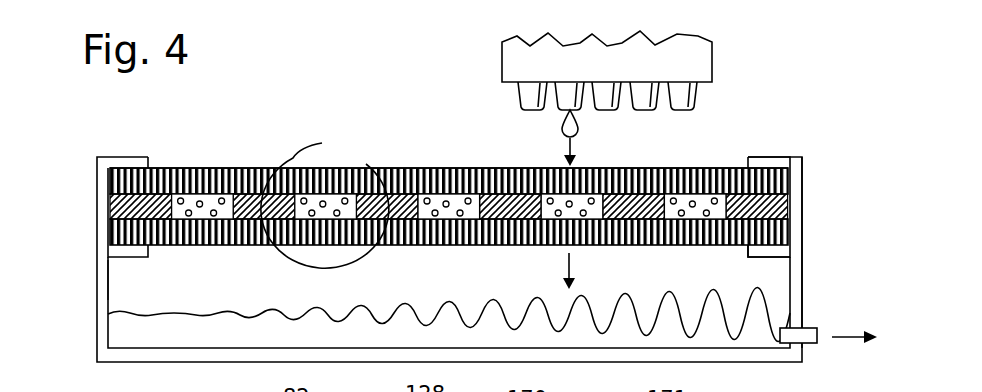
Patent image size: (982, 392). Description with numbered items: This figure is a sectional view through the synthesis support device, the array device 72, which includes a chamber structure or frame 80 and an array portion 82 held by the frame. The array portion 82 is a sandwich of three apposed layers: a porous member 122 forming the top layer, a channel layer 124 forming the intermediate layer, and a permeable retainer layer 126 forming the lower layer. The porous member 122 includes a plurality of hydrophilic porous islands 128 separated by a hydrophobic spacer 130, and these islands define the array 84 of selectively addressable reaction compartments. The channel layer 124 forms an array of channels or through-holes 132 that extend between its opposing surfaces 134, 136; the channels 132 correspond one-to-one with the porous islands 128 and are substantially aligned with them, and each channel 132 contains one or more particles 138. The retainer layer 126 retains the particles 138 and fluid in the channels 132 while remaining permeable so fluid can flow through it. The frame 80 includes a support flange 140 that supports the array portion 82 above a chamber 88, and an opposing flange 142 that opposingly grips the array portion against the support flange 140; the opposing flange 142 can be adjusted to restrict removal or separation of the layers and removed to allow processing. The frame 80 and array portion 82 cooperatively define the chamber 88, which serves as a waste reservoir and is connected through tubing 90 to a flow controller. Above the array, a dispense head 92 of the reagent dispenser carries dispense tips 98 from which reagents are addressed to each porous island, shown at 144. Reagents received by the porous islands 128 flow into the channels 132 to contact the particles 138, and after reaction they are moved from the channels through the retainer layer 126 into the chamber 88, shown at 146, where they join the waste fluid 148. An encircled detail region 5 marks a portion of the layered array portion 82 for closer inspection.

The detail circle (FIG. 5) 5 is at (325, 201).
The array device 72 is at (86, 140).
The frame 80 is at (92, 342).
The array portion 82 is at (168, 152).
The array 84 is at (196, 160).
The chamber 88 is at (112, 283).
The tubing 90 is at (805, 344).
The dispense head 92 is at (581, 83).
The dispense tips 98 is at (684, 96).
The porous member 122 is at (112, 178).
The channel layer 124 is at (416, 201).
The permeable retainer layer 126 is at (112, 228).
The porous islands 128 is at (449, 201).
The spacer 130 is at (492, 172).
The channels 132 is at (591, 215).
The opposing surface 134 is at (768, 188).
The opposing surface 136 is at (755, 222).
The particles 138 is at (706, 216).
The support flange 140 is at (768, 259).
The opposing flange 142 is at (777, 157).
The addressing of reagents 144 is at (576, 147).
The movement of reagents to waste 146 is at (561, 270).
The waste fluid 148 is at (443, 342).